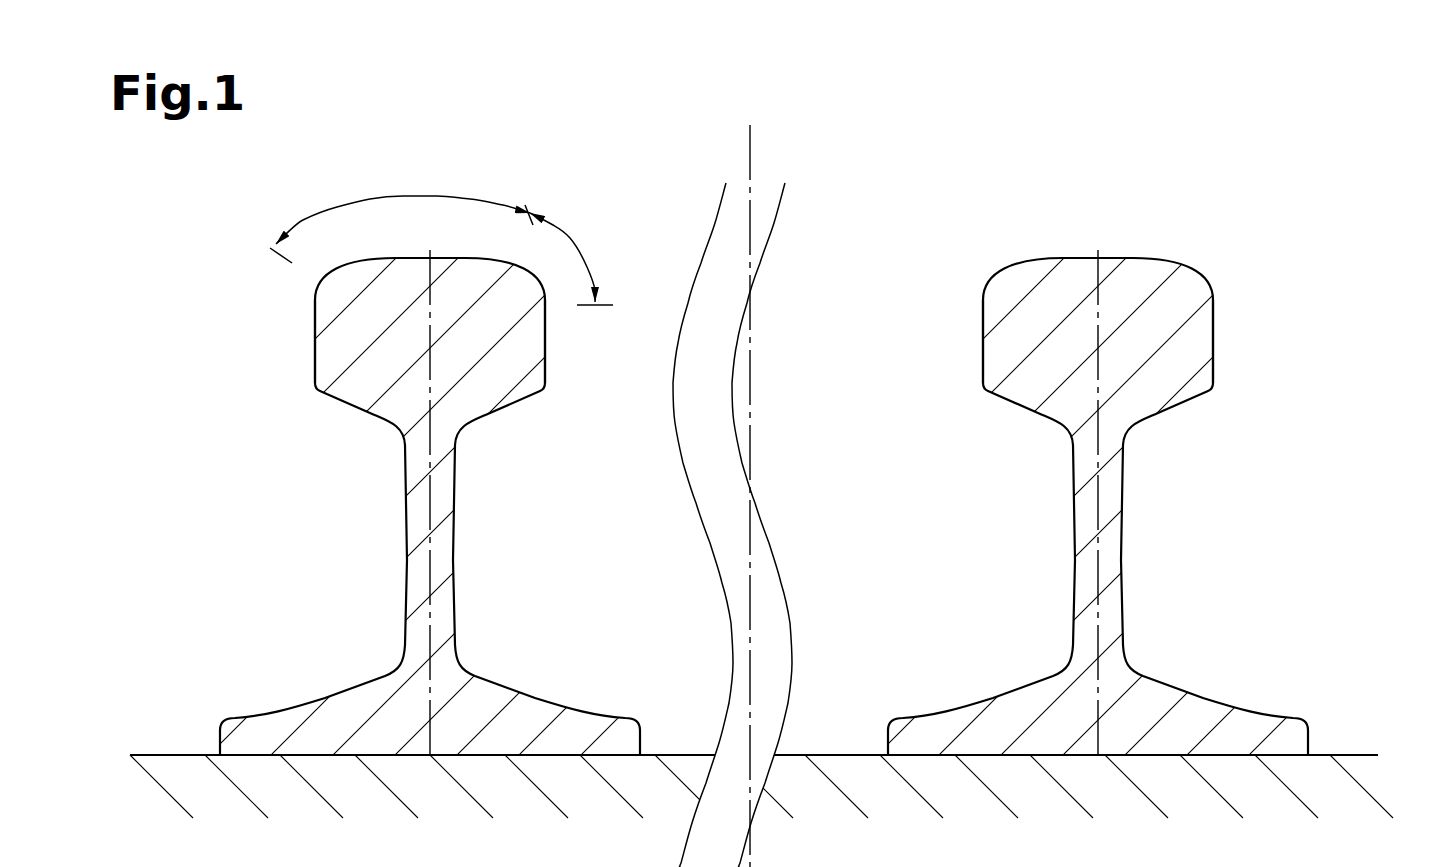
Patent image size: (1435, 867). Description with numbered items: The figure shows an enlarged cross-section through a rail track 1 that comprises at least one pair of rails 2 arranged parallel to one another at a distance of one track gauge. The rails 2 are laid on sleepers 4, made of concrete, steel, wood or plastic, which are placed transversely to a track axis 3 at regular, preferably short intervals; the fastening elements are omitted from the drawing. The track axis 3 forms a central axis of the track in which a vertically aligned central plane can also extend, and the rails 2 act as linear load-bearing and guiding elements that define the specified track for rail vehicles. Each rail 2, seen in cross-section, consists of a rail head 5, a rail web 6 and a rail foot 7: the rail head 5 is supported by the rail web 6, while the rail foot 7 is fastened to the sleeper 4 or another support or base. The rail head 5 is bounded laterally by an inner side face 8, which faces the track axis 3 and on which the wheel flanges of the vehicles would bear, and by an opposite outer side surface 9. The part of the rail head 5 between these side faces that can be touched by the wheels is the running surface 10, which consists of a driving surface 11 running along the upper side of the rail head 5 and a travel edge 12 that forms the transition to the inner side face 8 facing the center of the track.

The rail track 1 is at (1247, 175).
The rail 2 is at (258, 255).
The track axis 3 is at (752, 150).
The sleeper 4 is at (1348, 743).
The rail head 5 is at (285, 332).
The rail web 6 is at (372, 537).
The rail foot 7 is at (283, 692).
The inner side face 8 is at (545, 344).
The outer side surface 9 is at (313, 366).
The running surface 10 is at (450, 258).
The driving surface 11 is at (423, 198).
The travel edge 12 is at (583, 252).